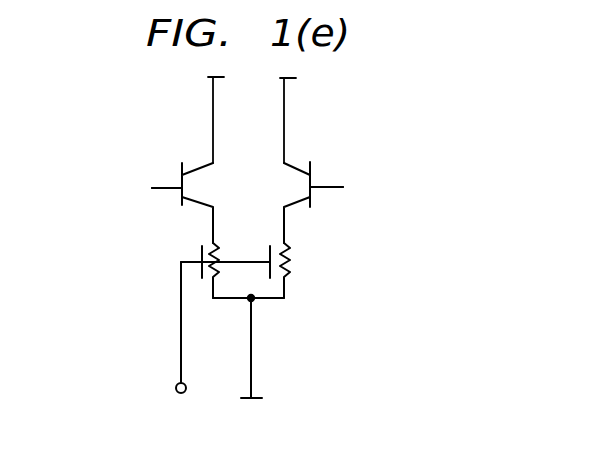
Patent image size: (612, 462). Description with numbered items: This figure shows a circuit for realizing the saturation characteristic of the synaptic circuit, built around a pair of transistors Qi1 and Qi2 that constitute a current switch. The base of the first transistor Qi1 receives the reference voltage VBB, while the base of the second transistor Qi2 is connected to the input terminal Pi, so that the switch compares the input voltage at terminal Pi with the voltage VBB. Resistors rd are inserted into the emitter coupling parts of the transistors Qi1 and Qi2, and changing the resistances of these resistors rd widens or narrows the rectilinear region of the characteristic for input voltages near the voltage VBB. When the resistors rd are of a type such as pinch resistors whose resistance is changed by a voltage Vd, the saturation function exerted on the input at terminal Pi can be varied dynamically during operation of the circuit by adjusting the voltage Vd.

The transistor Qi1 is at (182, 190).
The transistor Qi2 is at (313, 190).
The voltage VBB is at (132, 188).
The terminal Pi is at (349, 188).
The resistor rd is at (246, 268).
The voltage Vd is at (177, 345).